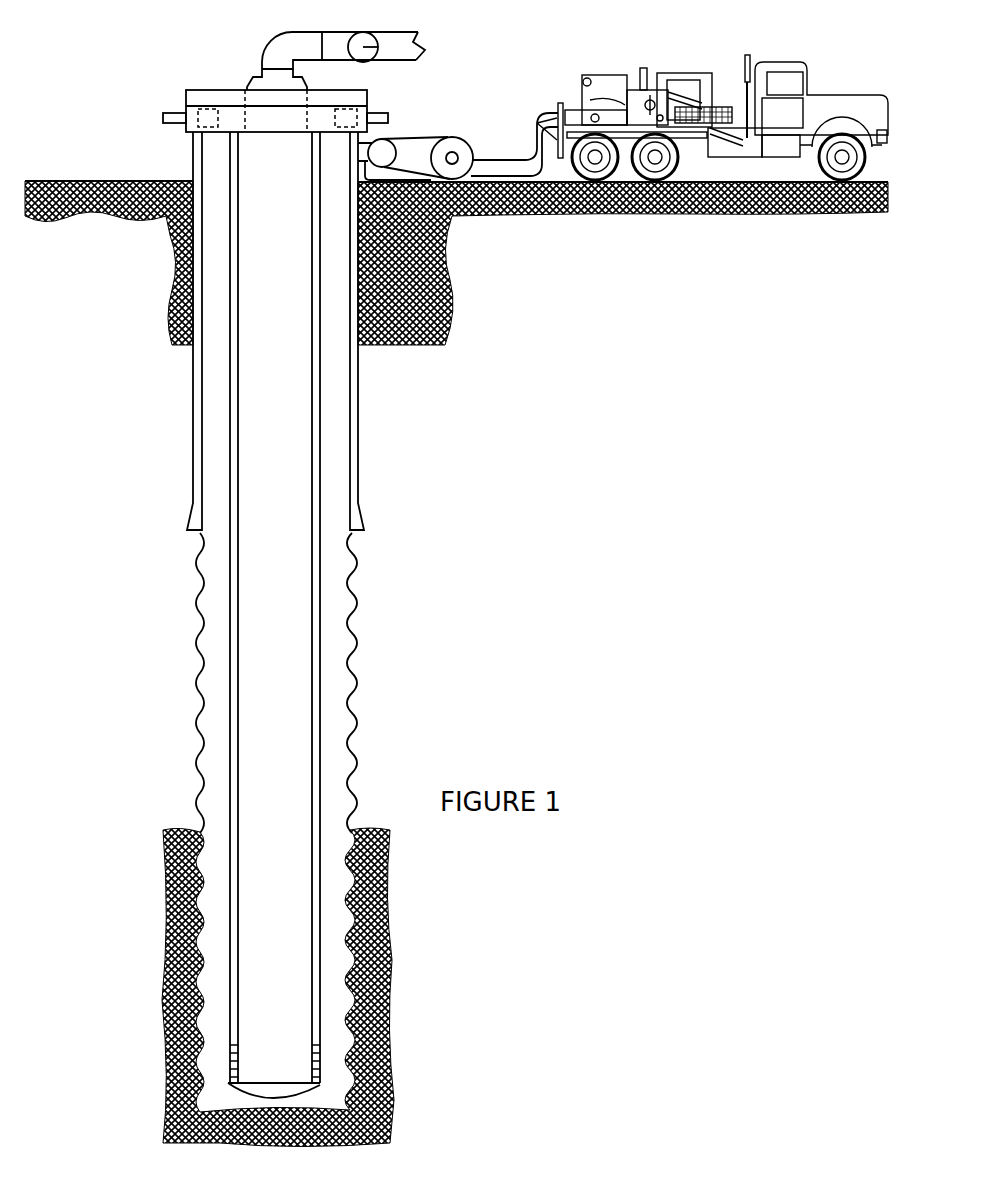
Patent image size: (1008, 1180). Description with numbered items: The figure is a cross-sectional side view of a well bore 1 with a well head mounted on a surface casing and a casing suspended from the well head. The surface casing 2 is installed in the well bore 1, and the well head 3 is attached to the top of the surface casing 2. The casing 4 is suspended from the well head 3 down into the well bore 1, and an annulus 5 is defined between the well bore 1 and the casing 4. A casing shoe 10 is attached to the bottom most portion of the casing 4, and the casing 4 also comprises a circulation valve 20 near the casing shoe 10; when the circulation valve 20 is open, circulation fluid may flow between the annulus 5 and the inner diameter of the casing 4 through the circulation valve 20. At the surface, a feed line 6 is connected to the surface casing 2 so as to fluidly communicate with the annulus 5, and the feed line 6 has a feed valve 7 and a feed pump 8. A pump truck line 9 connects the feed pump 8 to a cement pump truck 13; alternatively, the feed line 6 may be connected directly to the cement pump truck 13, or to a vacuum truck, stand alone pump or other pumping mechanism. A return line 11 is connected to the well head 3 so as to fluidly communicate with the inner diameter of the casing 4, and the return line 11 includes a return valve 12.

The well bore 1 is at (337, 692).
The surface casing 2 is at (358, 423).
The well head 3 is at (186, 106).
The casing 4 is at (320, 757).
The annulus 5 is at (335, 567).
The feed line 6 is at (430, 222).
The feed valve 7 is at (393, 142).
The feed pump 8 is at (452, 137).
The pump truck line 9 is at (533, 152).
The casing shoe 10 is at (300, 1088).
The return line 11 is at (253, 77).
The return valve 12 is at (378, 58).
The cement pump truck 13 is at (685, 90).
The circulation valve 20 is at (318, 1042).